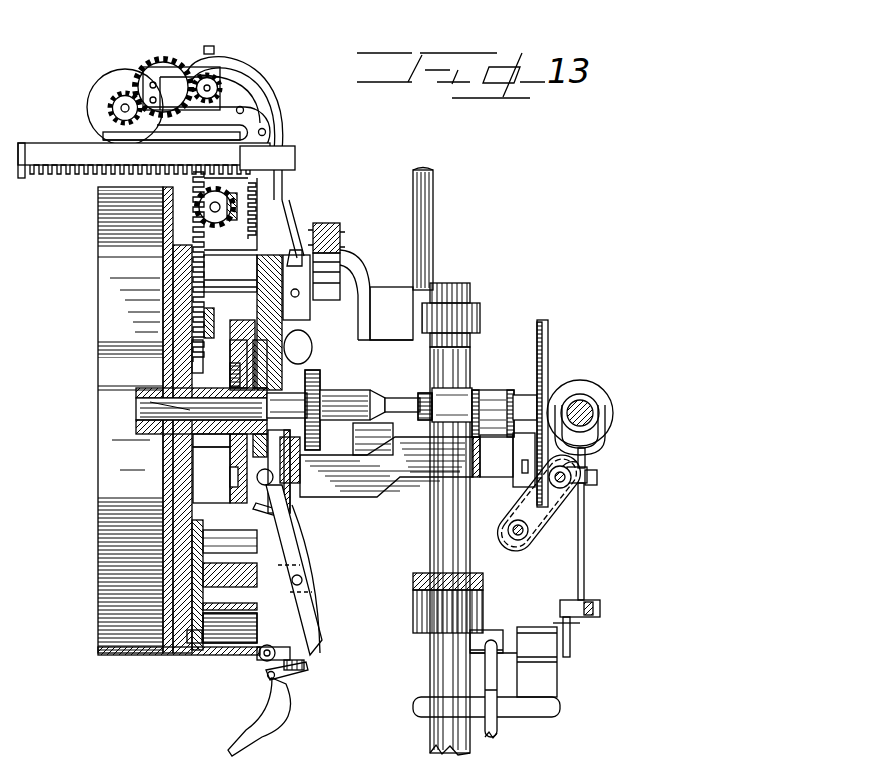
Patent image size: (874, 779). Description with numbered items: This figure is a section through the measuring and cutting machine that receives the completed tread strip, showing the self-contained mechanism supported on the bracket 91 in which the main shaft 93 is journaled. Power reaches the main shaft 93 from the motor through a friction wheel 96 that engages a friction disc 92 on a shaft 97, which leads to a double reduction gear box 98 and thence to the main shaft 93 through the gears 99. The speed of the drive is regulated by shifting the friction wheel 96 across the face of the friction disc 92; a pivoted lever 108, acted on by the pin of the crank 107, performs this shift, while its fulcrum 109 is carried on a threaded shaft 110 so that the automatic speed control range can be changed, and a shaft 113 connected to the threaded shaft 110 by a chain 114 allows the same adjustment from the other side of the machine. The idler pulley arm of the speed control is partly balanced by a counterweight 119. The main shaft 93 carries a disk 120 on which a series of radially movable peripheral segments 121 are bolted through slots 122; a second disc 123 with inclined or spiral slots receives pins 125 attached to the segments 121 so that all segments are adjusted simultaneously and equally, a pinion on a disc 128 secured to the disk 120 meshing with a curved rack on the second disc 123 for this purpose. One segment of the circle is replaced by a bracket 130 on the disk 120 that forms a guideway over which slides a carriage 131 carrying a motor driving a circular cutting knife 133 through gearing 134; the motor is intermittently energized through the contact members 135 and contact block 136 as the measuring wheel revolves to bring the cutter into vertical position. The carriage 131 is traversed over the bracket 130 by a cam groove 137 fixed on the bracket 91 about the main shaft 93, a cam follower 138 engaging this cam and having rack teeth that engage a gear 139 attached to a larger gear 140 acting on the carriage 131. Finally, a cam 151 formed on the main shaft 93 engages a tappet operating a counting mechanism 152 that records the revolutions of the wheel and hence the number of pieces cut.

The bracket 91 is at (427, 463).
The friction disc 92 is at (548, 367).
The main shaft 93 is at (135, 403).
The friction wheel 96 is at (594, 400).
The shaft 97 is at (460, 408).
The double reduction gear box 98 is at (337, 398).
The gears 99 is at (312, 368).
The crank 107 is at (570, 624).
The pivoted lever 108 is at (584, 512).
The fulcrum 109 is at (594, 483).
The threaded shaft 110 is at (588, 455).
The shaft 113 is at (520, 540).
The chain 114 is at (558, 524).
The counterweight 119 is at (497, 727).
The disk 120 is at (183, 335).
The peripheral segments 121 is at (117, 200).
The slots 122 is at (165, 498).
The second disc 123 is at (170, 245).
The pins 125 is at (120, 582).
The disc 128 is at (165, 302).
The bracket 130 is at (262, 166).
The carriage 131 is at (82, 148).
The circular cutting knife 133 is at (102, 92).
The gearing 134 is at (172, 62).
The contact members 135 is at (318, 222).
The contact block 136 is at (340, 226).
The cam groove 137 is at (237, 473).
The cam follower 138 is at (237, 375).
The gear 139 is at (252, 213).
The larger gear 140 is at (264, 235).
The cam 151 is at (430, 415).
The counting mechanism 152 is at (380, 297).